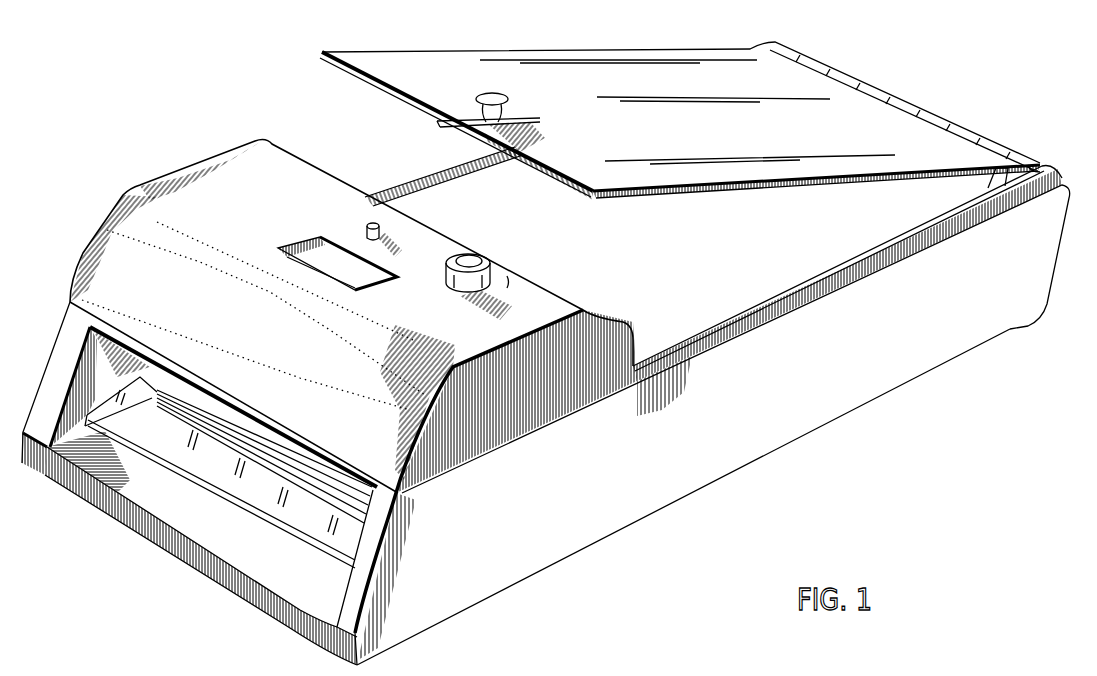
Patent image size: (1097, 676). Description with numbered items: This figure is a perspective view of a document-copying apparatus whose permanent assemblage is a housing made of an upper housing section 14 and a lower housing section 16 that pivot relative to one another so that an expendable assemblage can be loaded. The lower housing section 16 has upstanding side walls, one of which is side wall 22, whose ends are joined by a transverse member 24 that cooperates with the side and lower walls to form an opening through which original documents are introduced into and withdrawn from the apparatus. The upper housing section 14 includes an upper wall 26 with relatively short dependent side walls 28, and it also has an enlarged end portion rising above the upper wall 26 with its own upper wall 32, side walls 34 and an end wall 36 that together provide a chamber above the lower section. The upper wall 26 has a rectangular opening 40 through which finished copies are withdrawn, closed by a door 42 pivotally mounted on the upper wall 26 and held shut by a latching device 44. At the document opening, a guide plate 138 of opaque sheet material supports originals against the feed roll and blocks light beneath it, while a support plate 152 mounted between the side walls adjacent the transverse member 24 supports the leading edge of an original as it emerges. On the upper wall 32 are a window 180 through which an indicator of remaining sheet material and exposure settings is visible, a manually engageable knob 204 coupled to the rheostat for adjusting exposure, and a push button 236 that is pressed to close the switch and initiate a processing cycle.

The upper housing section 14 is at (157, 176).
The lower housing section 16 is at (625, 533).
The side wall 22 is at (758, 440).
The transverse member 24 is at (258, 432).
The upper wall 26 is at (1040, 168).
The side walls 28 is at (784, 300).
The upper wall 32 is at (273, 204).
The side walls 34 is at (521, 420).
The end wall 36 is at (218, 369).
The rectangular opening 40 is at (403, 185).
The door 42 is at (597, 58).
The latching device 44 is at (458, 124).
The guide plate 138 is at (208, 528).
The support plate 152 is at (182, 442).
The window 180 is at (340, 252).
The knob 204 is at (467, 264).
The push button 236 is at (374, 224).